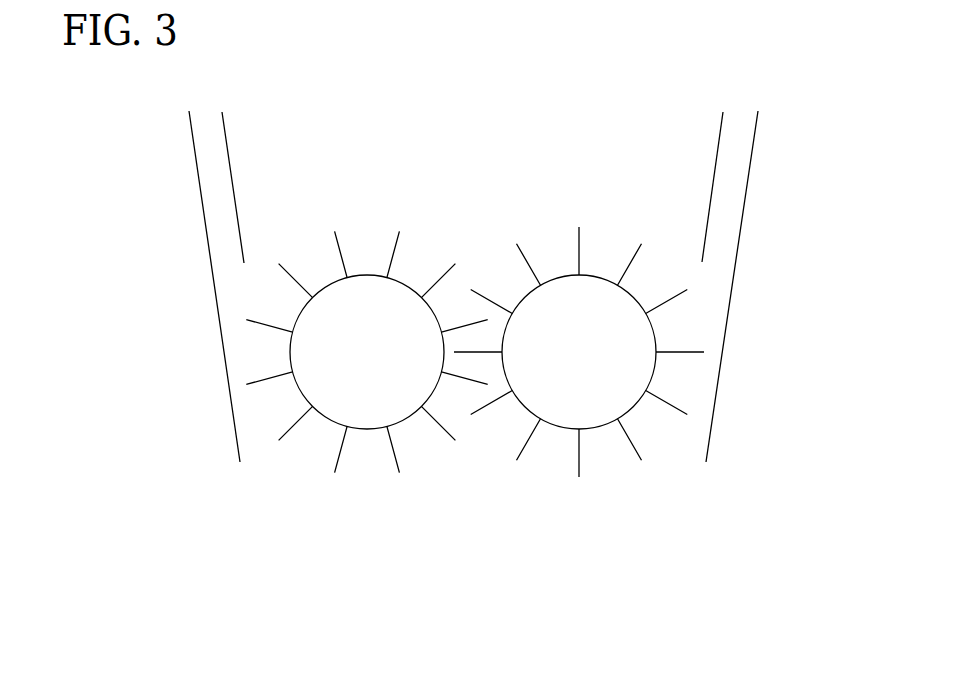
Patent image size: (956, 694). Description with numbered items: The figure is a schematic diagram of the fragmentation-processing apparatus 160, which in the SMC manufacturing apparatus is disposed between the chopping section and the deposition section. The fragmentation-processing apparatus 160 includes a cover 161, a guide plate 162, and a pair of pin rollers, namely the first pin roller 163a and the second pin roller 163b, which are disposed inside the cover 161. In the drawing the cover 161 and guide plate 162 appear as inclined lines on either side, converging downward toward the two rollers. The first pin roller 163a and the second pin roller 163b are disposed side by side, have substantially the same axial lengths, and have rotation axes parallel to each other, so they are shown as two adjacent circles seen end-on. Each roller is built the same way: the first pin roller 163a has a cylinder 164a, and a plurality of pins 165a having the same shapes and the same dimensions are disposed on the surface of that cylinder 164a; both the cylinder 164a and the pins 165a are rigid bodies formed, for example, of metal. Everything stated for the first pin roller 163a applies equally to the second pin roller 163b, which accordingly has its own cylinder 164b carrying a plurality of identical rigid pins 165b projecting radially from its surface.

The fragmentation-processing apparatus 160 is at (483, 123).
The cover 161 is at (195, 150).
The guide plate 162 is at (238, 222).
The first pin roller 163a is at (368, 482).
The second pin roller 163b is at (560, 482).
The cylinder 164a is at (290, 352).
The cylinder 164b is at (656, 337).
The pins 165a is at (285, 433).
The pins 165b is at (667, 402).